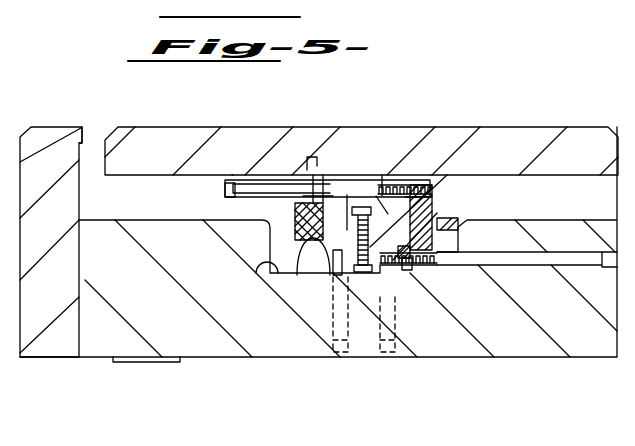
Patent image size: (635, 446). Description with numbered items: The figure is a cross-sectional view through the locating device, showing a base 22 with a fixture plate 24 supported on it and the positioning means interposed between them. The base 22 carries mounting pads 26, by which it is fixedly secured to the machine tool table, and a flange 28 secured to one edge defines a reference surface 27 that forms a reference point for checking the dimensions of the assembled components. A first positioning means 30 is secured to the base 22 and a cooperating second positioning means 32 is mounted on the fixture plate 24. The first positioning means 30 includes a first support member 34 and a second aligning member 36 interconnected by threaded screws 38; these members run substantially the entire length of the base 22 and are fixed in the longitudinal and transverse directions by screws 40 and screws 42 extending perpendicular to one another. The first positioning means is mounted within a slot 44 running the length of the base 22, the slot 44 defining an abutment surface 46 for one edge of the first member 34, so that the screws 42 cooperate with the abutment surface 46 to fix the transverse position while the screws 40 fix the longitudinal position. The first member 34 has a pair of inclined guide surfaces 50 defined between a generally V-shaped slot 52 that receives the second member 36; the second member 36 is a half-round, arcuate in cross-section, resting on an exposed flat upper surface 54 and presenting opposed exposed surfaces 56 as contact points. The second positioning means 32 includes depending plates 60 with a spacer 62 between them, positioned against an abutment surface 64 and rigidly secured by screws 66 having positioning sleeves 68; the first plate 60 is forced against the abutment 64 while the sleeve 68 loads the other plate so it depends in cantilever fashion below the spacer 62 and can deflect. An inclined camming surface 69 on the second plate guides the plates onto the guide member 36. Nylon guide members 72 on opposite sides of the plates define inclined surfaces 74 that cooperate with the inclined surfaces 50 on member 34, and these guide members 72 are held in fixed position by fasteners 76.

The base 22 is at (262, 359).
The fixture plate 24 is at (480, 122).
The mounting pads 26 is at (137, 363).
The reference surface 27 is at (87, 133).
The flange 28 is at (57, 338).
The first positioning means 30 is at (362, 278).
The second positioning means 32 is at (390, 151).
The first support member 34 is at (394, 265).
The second aligning member 36 is at (418, 213).
The threaded screws 38 is at (374, 270).
The screws 40 is at (345, 356).
The screws 42 is at (572, 260).
The slot 44 is at (258, 267).
The abutment surface 46 is at (412, 254).
The inclined guide surfaces 50 is at (306, 262).
The V-shaped slot 52 is at (347, 195).
The flat upper surface 54 is at (378, 200).
The exposed surfaces 56 is at (297, 212).
The first depending plate 60 is at (321, 184).
The spacer 62 is at (382, 176).
The abutment surface 64 is at (403, 176).
The screws 66 is at (228, 188).
The positioning sleeves 68 is at (245, 182).
The inclined camming surface 69 is at (319, 181).
The guide members 72 is at (294, 218).
The inclined surfaces 74 is at (333, 279).
The fasteners 76 is at (428, 206).